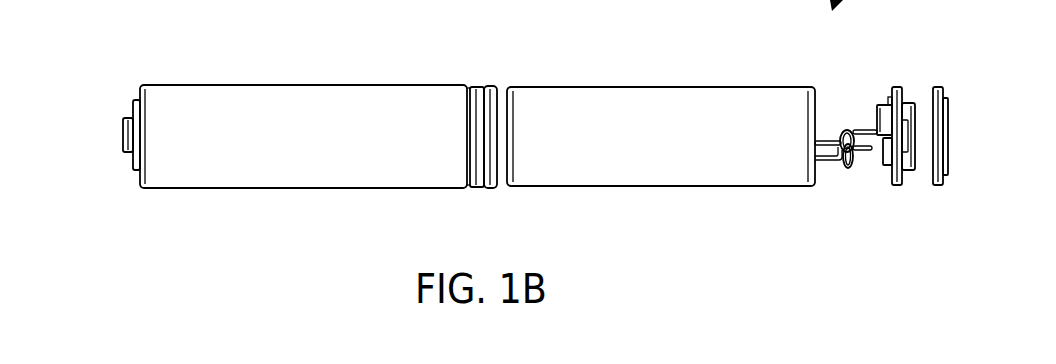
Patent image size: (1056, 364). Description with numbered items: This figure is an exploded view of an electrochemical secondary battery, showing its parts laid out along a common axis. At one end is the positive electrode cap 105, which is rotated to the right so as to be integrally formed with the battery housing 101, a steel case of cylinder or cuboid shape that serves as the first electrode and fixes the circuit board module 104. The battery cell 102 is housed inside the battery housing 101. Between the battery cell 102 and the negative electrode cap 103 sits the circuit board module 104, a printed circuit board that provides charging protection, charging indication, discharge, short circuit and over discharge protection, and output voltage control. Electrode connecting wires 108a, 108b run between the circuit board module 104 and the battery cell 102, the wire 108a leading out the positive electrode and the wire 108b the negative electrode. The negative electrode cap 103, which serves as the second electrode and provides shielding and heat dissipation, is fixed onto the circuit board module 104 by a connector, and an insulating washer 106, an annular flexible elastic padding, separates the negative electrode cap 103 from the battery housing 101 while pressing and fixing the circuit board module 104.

The battery housing 101 is at (232, 85).
The battery cell 102 is at (692, 87).
The negative electrode cap 103 is at (917, 135).
The circuit board module 104 is at (897, 86).
The positive electrode cap 105 is at (123, 135).
The insulating washer 106 is at (948, 177).
The positive electrode connecting wire 108a is at (843, 167).
The negative electrode connecting wire 108b is at (842, 130).